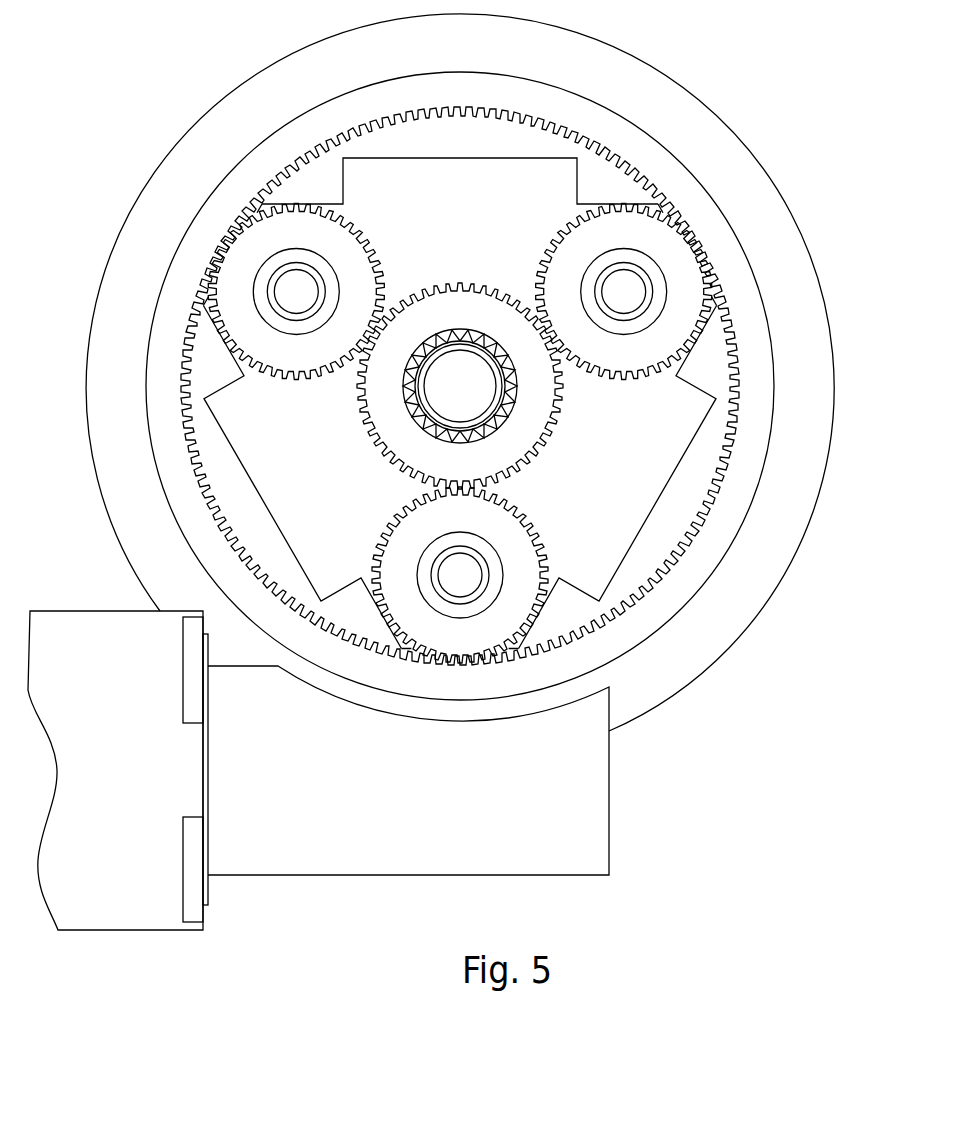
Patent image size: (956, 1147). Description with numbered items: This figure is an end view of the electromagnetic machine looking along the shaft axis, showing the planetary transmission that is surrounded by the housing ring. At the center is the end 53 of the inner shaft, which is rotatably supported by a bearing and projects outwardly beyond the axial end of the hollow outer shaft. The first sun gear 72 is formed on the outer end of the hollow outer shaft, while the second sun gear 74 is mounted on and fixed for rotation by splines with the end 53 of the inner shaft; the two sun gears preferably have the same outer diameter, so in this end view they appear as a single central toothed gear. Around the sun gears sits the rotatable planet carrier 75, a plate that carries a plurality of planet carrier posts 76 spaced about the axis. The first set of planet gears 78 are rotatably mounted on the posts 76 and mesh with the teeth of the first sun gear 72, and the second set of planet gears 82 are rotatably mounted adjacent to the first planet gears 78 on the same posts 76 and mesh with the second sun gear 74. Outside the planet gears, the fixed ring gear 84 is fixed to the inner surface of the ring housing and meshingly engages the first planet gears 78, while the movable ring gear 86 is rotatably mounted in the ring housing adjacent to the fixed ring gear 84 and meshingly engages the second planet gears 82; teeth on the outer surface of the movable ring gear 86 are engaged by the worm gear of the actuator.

The end 53 is at (472, 396).
The first sun gear 72 is at (460, 333).
The second sun gear 74 is at (455, 278).
The planet carrier 75 is at (640, 499).
The planet carrier posts 76 is at (297, 291).
The first set of planet gears 78 is at (459, 434).
The second set of planet gears 82 is at (605, 373).
The fixed ring gear 84 is at (484, 341).
The movable ring gear 86 is at (627, 138).